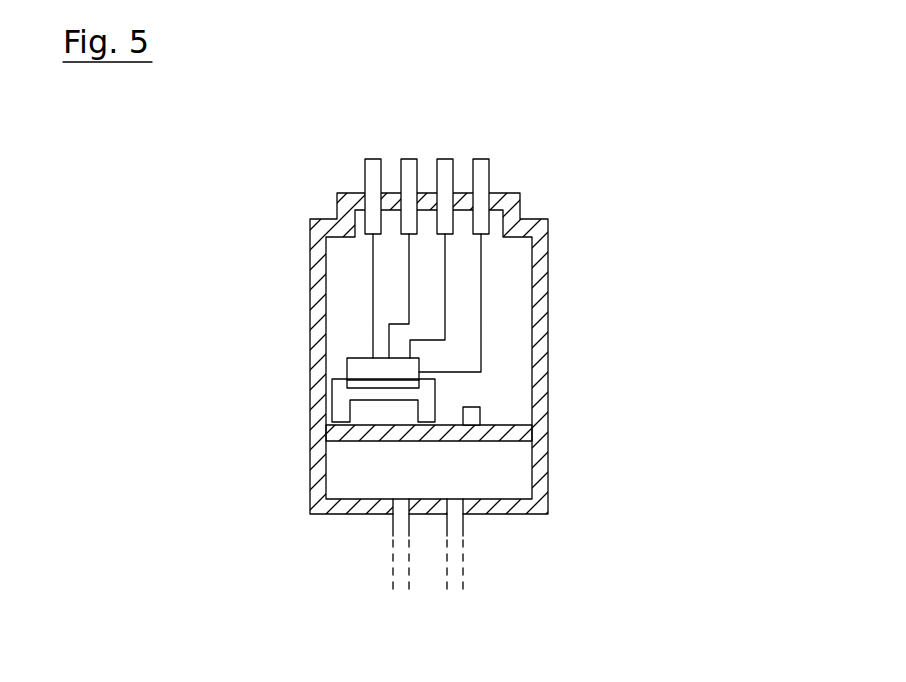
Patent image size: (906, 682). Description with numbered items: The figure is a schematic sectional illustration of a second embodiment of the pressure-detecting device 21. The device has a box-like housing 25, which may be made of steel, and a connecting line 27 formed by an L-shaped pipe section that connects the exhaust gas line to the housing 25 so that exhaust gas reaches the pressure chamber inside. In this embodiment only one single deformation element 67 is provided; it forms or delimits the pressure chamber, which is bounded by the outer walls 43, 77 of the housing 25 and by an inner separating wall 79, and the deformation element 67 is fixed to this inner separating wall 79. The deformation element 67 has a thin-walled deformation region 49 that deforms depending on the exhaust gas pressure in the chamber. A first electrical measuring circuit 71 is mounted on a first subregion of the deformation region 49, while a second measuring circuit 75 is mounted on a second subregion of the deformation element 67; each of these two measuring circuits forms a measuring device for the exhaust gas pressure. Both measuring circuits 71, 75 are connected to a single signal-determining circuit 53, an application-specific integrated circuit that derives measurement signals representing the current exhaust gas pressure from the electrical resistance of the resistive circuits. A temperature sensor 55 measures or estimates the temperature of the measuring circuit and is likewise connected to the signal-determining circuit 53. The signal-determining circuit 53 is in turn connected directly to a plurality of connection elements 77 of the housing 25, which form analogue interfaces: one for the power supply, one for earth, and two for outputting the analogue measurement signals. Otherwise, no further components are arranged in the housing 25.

The pressure-detecting device 21 is at (653, 218).
The housing 25 is at (543, 297).
The connecting line 27 is at (463, 565).
The outer wall 43 is at (520, 507).
The deformation region 49 is at (382, 407).
The signal-determining circuit 53 is at (360, 362).
The temperature sensor 55 is at (473, 407).
The deformation element 67 is at (340, 393).
The first electrical measuring circuit 71 is at (363, 383).
The second measuring circuit 75 is at (403, 382).
The connection elements 77 is at (407, 168).
The inner separating wall 79 is at (502, 432).